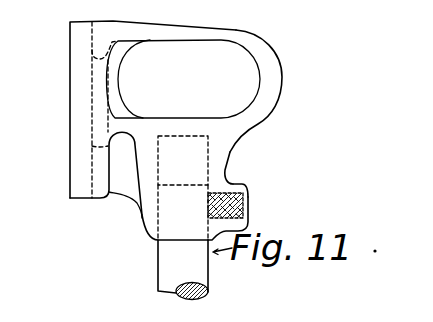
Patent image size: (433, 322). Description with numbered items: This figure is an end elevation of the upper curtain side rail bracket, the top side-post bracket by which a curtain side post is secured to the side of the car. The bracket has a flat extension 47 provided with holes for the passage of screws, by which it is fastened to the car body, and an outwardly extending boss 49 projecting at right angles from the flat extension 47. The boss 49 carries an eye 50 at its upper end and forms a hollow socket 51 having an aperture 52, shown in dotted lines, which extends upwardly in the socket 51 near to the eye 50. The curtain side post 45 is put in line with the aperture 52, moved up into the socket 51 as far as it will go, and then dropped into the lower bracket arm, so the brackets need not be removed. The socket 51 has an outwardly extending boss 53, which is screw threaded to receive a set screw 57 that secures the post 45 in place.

The curtain side-post 45 is at (186, 270).
The flat extension 47 is at (72, 144).
The outwardly extending boss 49 is at (237, 135).
The eye 50 is at (183, 79).
The hollow socket 51 is at (212, 168).
The aperture 52 is at (183, 188).
The outwardly extending boss 53 is at (248, 187).
The set screw 57 is at (247, 205).